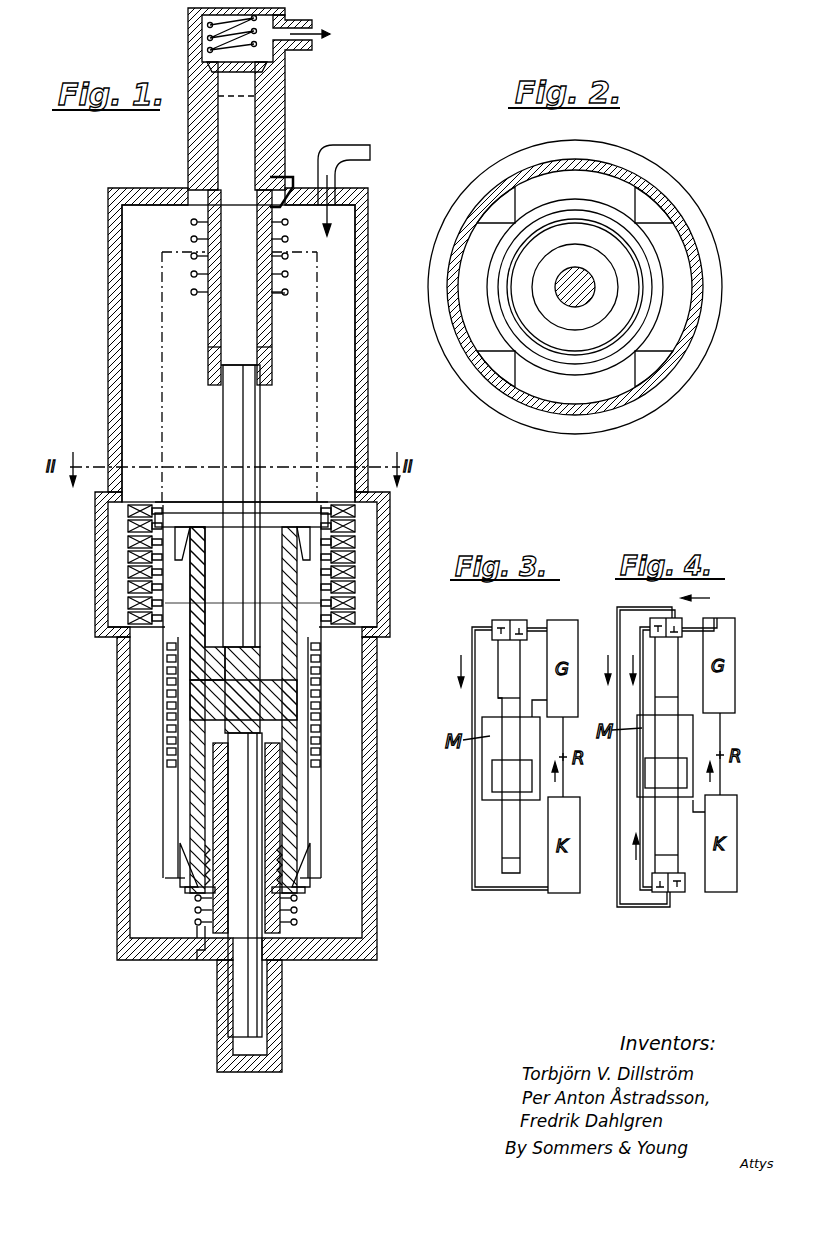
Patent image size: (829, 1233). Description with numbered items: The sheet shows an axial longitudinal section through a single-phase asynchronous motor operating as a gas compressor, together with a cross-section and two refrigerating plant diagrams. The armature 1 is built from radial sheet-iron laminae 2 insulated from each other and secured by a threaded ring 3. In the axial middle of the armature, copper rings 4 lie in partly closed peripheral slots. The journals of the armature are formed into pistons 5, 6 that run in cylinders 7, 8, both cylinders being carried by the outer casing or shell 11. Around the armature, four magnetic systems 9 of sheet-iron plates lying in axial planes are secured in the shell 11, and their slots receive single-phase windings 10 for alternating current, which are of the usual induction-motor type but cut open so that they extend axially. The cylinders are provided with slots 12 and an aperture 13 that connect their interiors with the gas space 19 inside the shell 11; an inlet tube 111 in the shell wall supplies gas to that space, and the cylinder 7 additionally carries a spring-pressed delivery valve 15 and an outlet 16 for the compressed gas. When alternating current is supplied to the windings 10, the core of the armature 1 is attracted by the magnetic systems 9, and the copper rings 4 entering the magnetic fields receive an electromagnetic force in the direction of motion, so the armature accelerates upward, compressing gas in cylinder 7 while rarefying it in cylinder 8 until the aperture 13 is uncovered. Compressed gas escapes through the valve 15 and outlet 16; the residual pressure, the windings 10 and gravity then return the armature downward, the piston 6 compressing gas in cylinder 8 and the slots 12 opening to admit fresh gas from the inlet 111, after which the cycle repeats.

In FIG. 1, the armature 1 is at (270, 537).
In FIG. 2, the armature 1 is at (567, 233).
In FIG. 1, the sheet-iron laminae 2 is at (180, 793).
In FIG. 2, the sheet-iron laminae 2 is at (517, 243).
In FIG. 1, the threaded ring 3 is at (185, 887).
In FIG. 1, the copper rings 4 is at (170, 722).
In FIG. 1, the piston 5 is at (252, 414).
In FIG. 2, the piston 5 is at (595, 285).
In FIG. 1, the piston 6 is at (252, 972).
In FIG. 1, the cylinder 7 is at (202, 143).
In FIG. 1, the cylinder 8 is at (228, 1012).
In FIG. 1, the magnetic systems 9 is at (118, 603).
In FIG. 2, the magnetic systems 9 is at (603, 180).
In FIG. 1, the single-phase windings 10 is at (128, 548).
In FIG. 1, the outer casing or shell 11 is at (108, 353).
In FIG. 2, the outer casing or shell 11 is at (680, 353).
In FIG. 1, the slots 12 is at (268, 356).
In FIG. 1, the aperture 13 is at (312, 945).
In FIG. 1, the spring-pressed delivery valve 15 is at (250, 62).
In FIG. 1, the outlet 16 is at (290, 22).
In FIG. 1, the chamber 19 is at (142, 230).
In FIG. 1, the inlet tube 111 is at (350, 152).
In FIG. 3, the inlet tube 111 is at (535, 699).
In FIG. 4, the inlet tube 111 is at (692, 816).